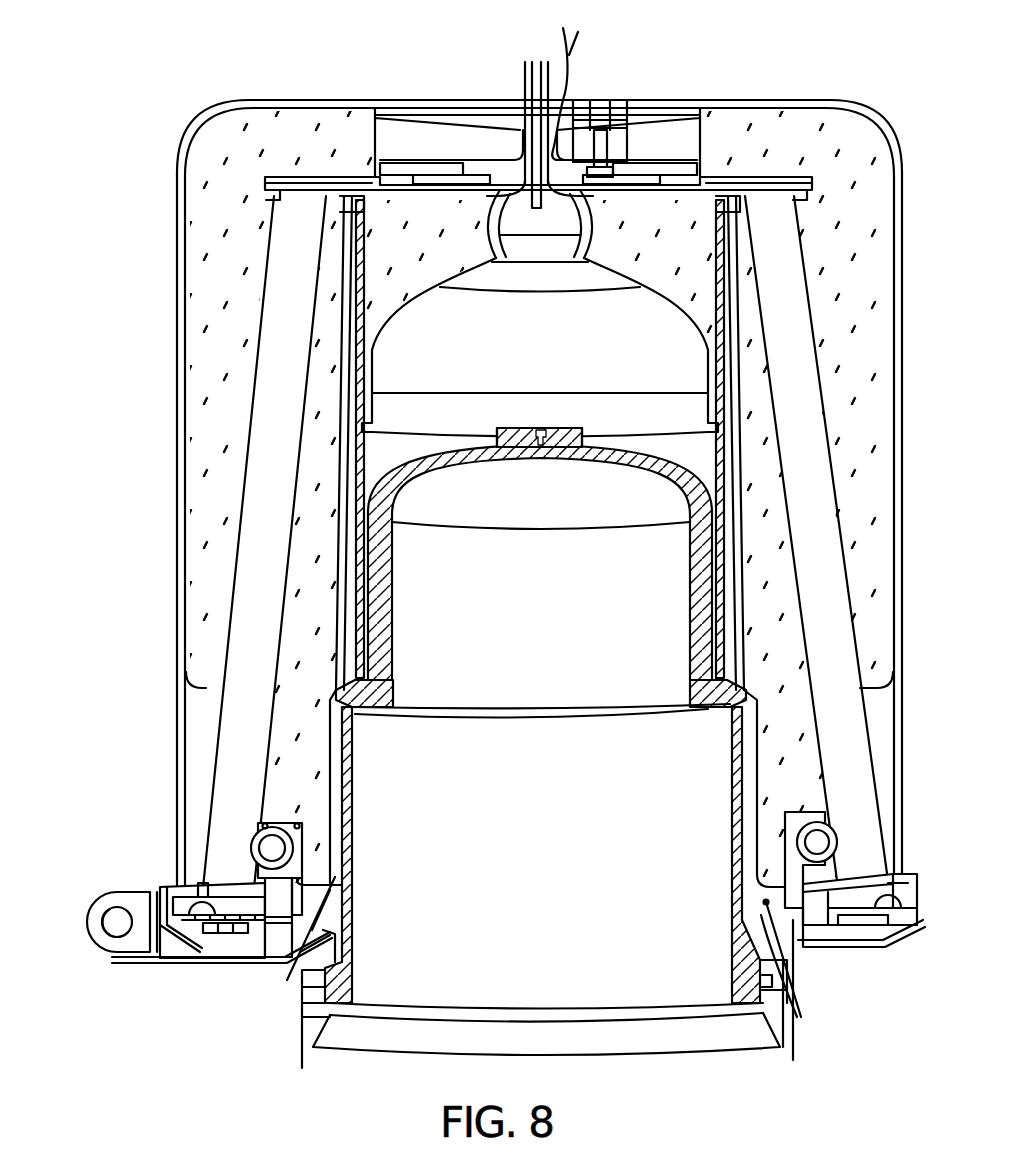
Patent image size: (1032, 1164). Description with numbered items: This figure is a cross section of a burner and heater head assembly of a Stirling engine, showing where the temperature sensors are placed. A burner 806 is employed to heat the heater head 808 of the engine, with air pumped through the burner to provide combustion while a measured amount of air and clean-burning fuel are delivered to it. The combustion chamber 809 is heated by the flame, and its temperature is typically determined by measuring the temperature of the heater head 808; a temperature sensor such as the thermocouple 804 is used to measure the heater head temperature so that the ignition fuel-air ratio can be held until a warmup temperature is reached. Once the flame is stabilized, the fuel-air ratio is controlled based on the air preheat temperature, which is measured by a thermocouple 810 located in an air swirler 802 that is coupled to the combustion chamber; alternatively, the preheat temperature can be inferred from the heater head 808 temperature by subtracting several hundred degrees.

The air swirler 802 is at (470, 165).
The thermocouple 810 is at (722, 93).
The burner 806 is at (563, 370).
The combustion chamber 809 is at (383, 455).
The heater head 808 is at (387, 697).
The thermocouple 804 is at (798, 975).